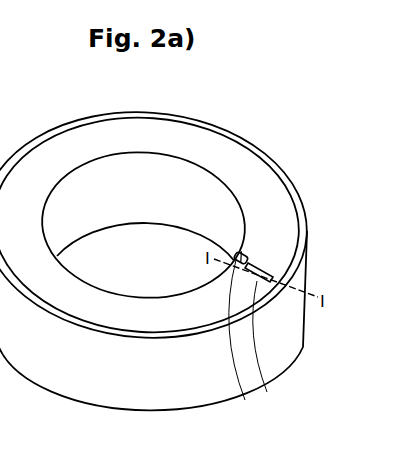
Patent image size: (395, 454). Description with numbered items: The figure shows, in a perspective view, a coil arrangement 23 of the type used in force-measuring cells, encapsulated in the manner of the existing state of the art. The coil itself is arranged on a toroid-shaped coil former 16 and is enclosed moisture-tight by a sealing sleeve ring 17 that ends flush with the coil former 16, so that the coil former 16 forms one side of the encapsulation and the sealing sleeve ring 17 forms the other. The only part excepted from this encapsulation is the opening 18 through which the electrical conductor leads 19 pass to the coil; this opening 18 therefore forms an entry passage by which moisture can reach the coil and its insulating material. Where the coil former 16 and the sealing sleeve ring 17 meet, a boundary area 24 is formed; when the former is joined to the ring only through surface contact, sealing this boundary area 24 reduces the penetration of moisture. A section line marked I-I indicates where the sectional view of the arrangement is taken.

The coil former 16 is at (242, 162).
The sealing sleeve ring 17 is at (278, 337).
The opening 18 is at (269, 337).
The electrical conductor leads 19 is at (248, 343).
The coil arrangement 23 is at (240, 115).
The boundary area 24 is at (72, 130).